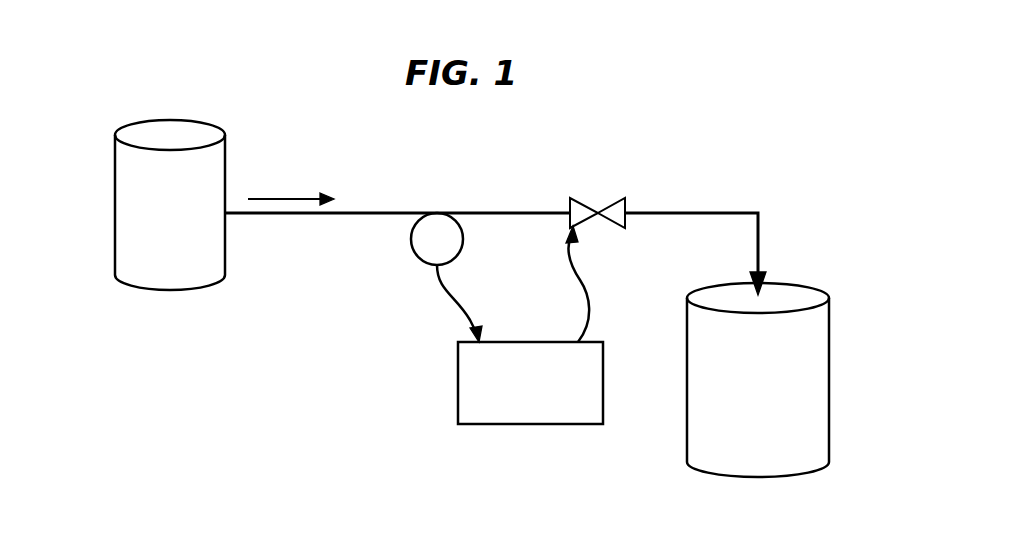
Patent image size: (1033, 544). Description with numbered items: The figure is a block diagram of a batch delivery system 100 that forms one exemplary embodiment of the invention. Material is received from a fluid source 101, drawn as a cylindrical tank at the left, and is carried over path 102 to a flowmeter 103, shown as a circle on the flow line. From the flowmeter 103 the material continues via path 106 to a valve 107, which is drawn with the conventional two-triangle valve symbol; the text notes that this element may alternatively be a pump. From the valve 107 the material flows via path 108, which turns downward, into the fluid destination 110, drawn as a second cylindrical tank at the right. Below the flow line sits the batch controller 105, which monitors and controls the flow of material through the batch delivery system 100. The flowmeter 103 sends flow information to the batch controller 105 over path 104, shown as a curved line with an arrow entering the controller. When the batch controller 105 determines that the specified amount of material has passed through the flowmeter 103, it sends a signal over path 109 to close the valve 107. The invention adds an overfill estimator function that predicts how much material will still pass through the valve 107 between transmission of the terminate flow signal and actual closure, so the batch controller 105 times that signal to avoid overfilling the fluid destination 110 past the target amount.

The batch delivery system 100 is at (212, 66).
The fluid source 101 is at (128, 163).
The path 102 is at (373, 212).
The flowmeter 103 is at (425, 247).
The path 104 is at (448, 288).
The batch controller 105 is at (502, 425).
The path 106 is at (514, 212).
The valve 107 is at (607, 205).
The path 108 is at (738, 212).
The path 109 is at (578, 270).
The fluid destination 110 is at (822, 330).